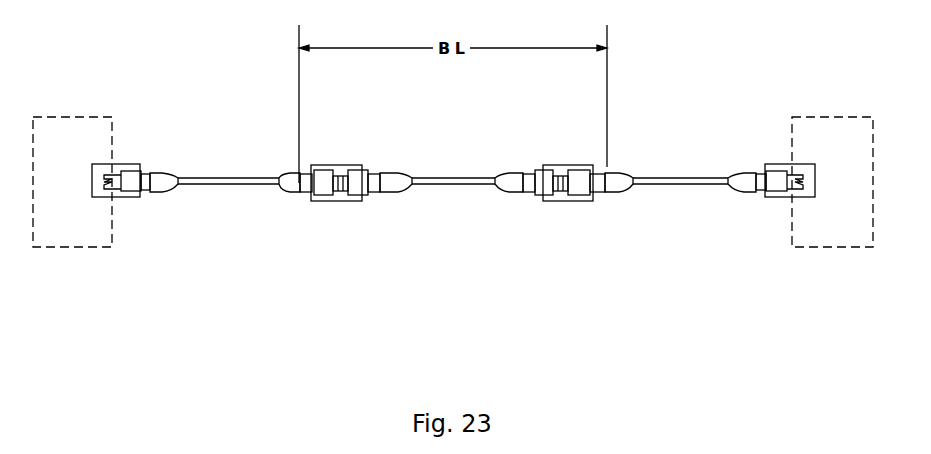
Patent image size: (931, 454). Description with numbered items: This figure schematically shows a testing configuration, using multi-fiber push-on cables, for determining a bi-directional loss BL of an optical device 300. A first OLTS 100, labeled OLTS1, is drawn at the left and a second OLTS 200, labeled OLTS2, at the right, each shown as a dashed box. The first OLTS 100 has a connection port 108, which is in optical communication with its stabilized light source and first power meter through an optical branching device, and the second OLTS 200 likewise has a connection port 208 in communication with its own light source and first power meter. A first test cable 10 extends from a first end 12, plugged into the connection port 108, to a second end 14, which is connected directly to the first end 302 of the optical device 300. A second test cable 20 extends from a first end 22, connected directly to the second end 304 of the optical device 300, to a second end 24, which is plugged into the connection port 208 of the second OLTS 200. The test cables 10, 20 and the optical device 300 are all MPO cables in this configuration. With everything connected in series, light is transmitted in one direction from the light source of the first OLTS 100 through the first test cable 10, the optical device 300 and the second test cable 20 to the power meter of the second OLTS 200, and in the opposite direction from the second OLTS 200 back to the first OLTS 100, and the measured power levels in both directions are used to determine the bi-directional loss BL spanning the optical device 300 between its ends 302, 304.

The first OLTS 100 is at (113, 110).
The second OLTS 200 is at (792, 110).
The connection port 108 is at (125, 198).
The connection port 208 is at (806, 182).
The first test cable 10 is at (227, 184).
The first end 12 is at (142, 190).
The second end 14 is at (304, 176).
The second test cable 20 is at (680, 185).
The first end 22 is at (597, 177).
The second end 24 is at (762, 192).
The optical device 300 is at (453, 186).
The first end 302 is at (368, 180).
The second end 304 is at (535, 173).